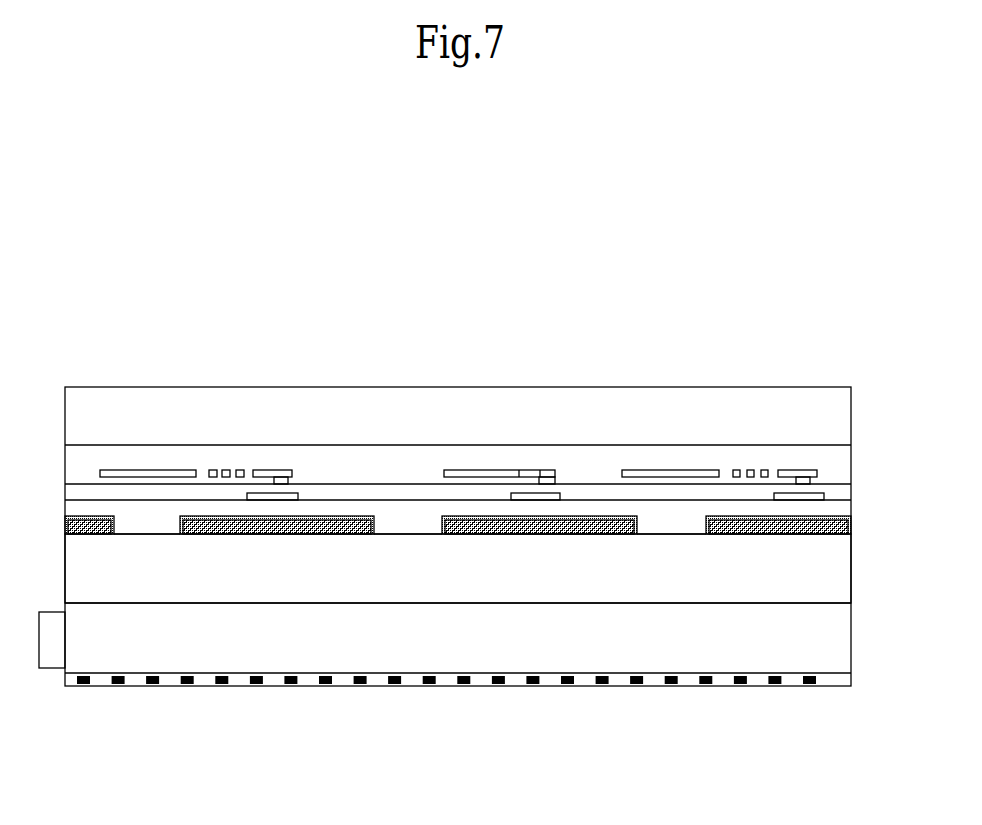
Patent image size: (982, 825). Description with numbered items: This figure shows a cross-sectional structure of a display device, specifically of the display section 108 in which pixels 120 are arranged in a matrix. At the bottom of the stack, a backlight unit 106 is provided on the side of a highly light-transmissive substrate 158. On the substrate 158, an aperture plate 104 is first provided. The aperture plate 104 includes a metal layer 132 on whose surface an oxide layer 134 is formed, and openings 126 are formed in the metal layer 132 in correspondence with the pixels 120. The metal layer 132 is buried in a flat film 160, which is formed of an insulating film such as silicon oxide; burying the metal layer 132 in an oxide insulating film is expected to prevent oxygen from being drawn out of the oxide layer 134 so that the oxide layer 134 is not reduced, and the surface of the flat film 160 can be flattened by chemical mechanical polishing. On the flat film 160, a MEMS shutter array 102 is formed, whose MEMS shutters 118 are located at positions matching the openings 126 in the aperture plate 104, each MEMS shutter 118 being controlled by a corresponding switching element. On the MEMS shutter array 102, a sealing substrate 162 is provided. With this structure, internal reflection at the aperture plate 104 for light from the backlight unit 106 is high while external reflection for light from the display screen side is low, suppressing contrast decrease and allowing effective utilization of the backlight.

The display section 108 is at (112, 346).
The MEMS shutter 118 is at (173, 469).
The pixel 120 is at (533, 494).
The opening 126 is at (412, 533).
The metal layer 132 is at (332, 516).
The oxide layer 134 is at (362, 516).
The sealing substrate 162 is at (624, 407).
The MEMS shutter array 102 is at (863, 455).
The aperture plate 104 is at (863, 517).
The backlight unit 106 is at (863, 606).
The highly light-transmissive substrate 158 is at (583, 578).
The flat film 160 is at (670, 520).